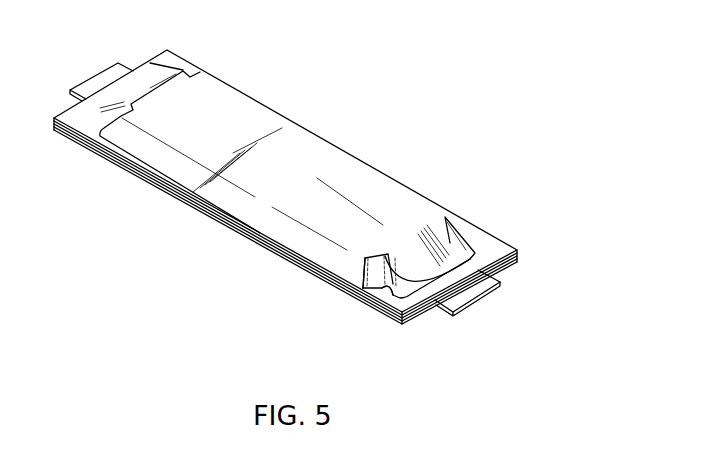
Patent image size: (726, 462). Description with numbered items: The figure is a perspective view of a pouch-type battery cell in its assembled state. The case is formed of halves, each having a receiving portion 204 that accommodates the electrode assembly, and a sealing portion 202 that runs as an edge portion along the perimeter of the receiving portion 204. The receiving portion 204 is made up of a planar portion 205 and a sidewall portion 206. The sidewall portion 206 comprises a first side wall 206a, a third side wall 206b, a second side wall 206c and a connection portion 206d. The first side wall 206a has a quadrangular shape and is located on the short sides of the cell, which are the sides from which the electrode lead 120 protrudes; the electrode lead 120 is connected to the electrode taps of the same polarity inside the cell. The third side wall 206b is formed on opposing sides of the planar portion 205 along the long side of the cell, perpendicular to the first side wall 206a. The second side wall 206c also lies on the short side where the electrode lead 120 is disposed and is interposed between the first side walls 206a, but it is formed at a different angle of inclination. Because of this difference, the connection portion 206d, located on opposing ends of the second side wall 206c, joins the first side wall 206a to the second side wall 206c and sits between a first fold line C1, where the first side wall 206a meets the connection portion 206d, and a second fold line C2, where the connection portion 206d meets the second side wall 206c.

The sealing portion 202 is at (433, 318).
The receiving portion 204 is at (265, 108).
The planar portion 205 is at (220, 87).
The sidewall portion 206 is at (555, 84).
The first side wall 206a is at (383, 254).
The third side wall 206b is at (293, 236).
The second side wall 206c is at (452, 242).
The connection portion 206d is at (470, 259).
The first fold line C1 is at (365, 283).
The second fold line C2 is at (391, 298).
The electrode lead 120 is at (476, 292).